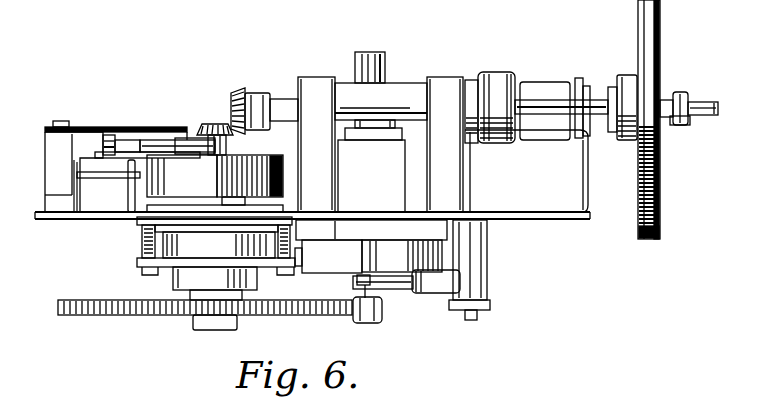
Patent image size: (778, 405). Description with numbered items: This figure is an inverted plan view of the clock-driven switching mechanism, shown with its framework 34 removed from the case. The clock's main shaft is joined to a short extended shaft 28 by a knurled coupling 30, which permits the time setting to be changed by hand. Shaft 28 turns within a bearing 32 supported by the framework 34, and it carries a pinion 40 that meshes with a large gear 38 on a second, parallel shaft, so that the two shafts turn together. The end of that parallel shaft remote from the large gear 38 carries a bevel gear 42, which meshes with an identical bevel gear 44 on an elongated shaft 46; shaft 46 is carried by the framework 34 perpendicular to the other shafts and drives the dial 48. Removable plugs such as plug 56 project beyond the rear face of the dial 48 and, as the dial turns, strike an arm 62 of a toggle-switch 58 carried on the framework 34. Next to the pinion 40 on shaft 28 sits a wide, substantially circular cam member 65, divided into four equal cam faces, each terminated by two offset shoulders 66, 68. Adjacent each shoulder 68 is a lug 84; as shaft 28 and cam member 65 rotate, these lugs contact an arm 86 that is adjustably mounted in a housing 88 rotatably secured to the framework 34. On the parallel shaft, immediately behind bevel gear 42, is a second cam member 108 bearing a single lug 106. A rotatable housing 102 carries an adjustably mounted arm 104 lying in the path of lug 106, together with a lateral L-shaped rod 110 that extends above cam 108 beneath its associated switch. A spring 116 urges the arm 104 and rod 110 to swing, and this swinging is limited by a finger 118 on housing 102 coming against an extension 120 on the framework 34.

The knurled coupling 30 is at (385, 60).
The bearing 32 is at (395, 172).
The framework 34 is at (562, 195).
The bevel gear 44 is at (245, 92).
The bevel gear 42 is at (214, 125).
The cam member 108 is at (284, 173).
The extension 120 is at (143, 190).
The finger 118 is at (100, 181).
The rotatable housing 102 is at (46, 152).
The spring 116 is at (100, 132).
The arm 104 is at (140, 140).
The rod 110 is at (163, 140).
The lug 106 is at (180, 140).
The toggle-switch 58 is at (545, 83).
The arm 62 is at (613, 138).
The dial 48 is at (686, 212).
The removable plug 56 is at (683, 94).
The elongated shaft 46 is at (705, 117).
The cam member 65 is at (307, 289).
The large gear 38 is at (90, 317).
The shoulder 66 is at (356, 250).
The shoulder 68 is at (361, 267).
The lug 84 is at (372, 284).
The arm 86 is at (405, 284).
The extended shaft 28 is at (358, 284).
The housing 88 is at (488, 278).
The pinion 40 is at (377, 312).